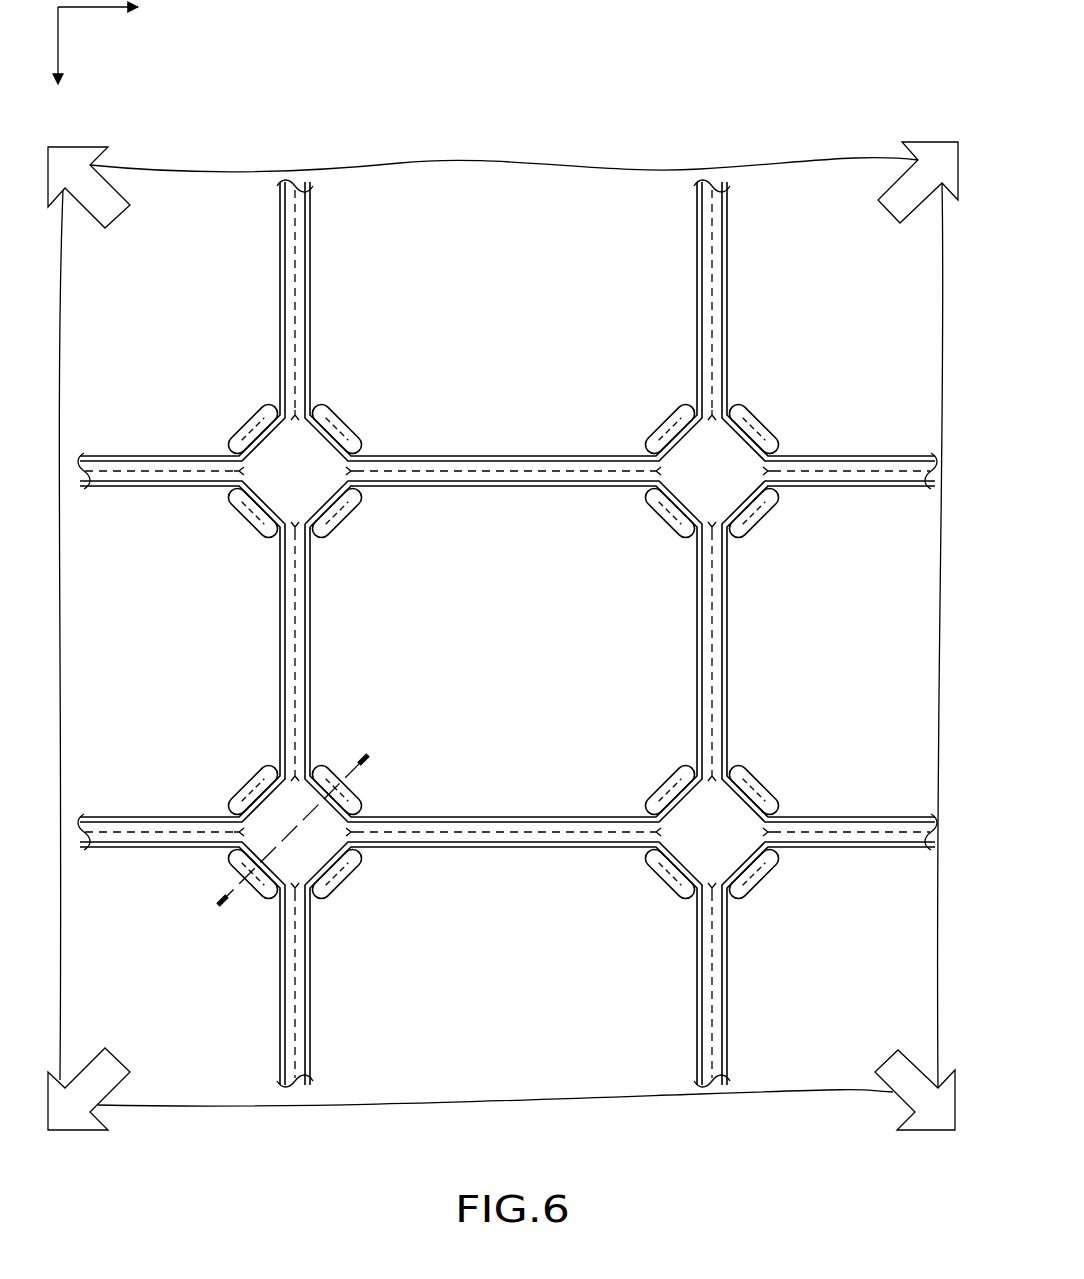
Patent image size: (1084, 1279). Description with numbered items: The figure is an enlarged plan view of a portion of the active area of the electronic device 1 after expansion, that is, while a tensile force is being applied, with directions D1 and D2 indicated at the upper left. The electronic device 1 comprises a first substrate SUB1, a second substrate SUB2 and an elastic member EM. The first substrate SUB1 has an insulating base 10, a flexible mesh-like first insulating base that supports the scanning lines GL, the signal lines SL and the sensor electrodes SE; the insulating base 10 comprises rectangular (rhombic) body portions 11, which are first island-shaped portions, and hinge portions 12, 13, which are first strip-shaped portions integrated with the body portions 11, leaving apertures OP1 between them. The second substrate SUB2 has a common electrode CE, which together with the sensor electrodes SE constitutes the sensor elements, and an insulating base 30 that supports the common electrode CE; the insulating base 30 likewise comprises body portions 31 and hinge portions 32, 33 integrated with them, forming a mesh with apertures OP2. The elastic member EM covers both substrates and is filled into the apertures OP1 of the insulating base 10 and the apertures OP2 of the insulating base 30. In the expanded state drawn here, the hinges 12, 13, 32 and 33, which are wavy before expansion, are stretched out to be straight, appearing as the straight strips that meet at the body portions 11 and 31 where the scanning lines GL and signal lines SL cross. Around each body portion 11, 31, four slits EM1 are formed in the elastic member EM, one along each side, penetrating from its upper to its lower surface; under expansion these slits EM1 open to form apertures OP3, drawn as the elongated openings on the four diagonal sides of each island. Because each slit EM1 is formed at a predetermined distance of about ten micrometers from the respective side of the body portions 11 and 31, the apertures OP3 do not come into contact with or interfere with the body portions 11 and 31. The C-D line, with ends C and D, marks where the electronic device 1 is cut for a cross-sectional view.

The electronic device 1 is at (697, 114).
The insulating base 10 is at (507, 633).
The insulating base 30 is at (312, 262).
The body portions 11 is at (503, 651).
The body portions 31 is at (339, 514).
The hinge portions 12 is at (507, 614).
The hinge portions 32 is at (500, 450).
The hinge portions 13 is at (503, 633).
The hinge portions 33 is at (315, 636).
The common electrode CE is at (311, 221).
The signal lines SL is at (292, 318).
The scanning lines GL is at (157, 468).
The sensor electrodes SE is at (323, 447).
The elastic member EM is at (806, 156).
The slits EM1 is at (245, 513).
The apertures OP1 is at (462, 699).
The apertures OP2 is at (496, 665).
The apertures OP3 is at (265, 530).
The first substrate SUB1 is at (501, 644).
The second substrate SUB2 is at (860, 273).
The first direction D1 is at (109, 63).
The second direction D2 is at (109, 63).
The C-D line end C is at (294, 836).
The C-D line end D is at (294, 836).